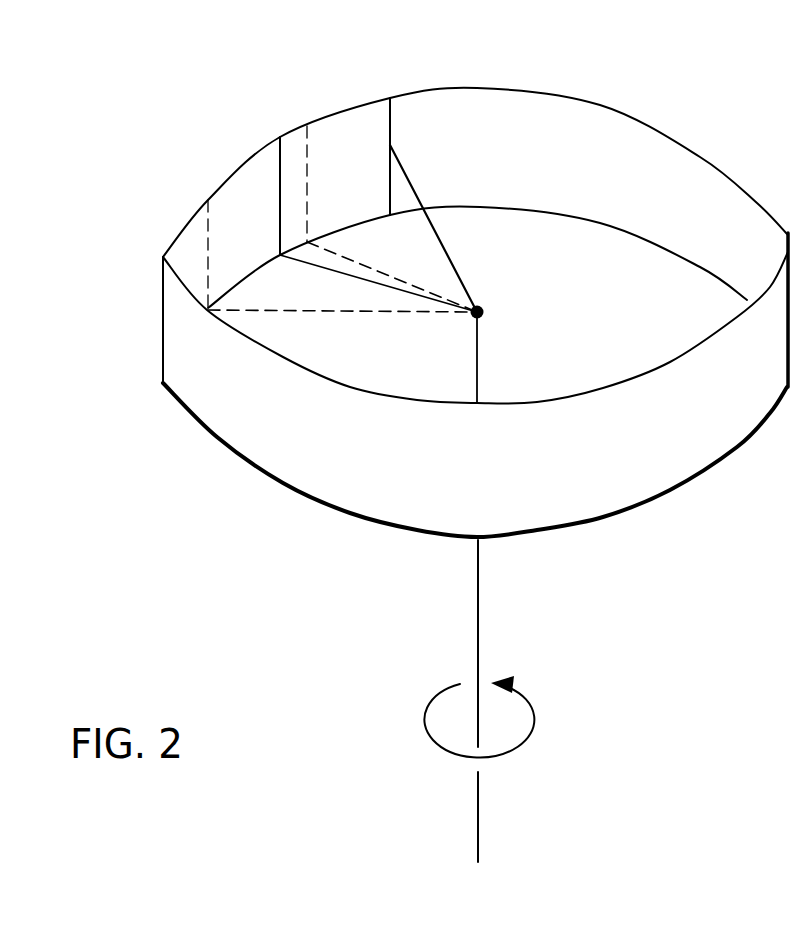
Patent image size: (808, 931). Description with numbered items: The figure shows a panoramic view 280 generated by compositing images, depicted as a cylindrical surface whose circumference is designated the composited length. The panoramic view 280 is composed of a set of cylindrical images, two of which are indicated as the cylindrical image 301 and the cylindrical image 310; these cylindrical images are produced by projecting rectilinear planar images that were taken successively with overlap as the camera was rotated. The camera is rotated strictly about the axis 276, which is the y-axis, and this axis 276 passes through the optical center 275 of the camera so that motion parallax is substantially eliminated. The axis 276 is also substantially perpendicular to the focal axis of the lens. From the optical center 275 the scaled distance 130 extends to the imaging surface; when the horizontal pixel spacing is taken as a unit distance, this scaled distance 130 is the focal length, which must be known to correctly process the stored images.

The panoramic view 280 is at (613, 512).
The cylindrical image 310 is at (207, 167).
The cylindrical image 301 is at (390, 85).
The scaled distance 130 is at (448, 242).
The optical center 275 is at (483, 309).
The axis 276 is at (480, 820).